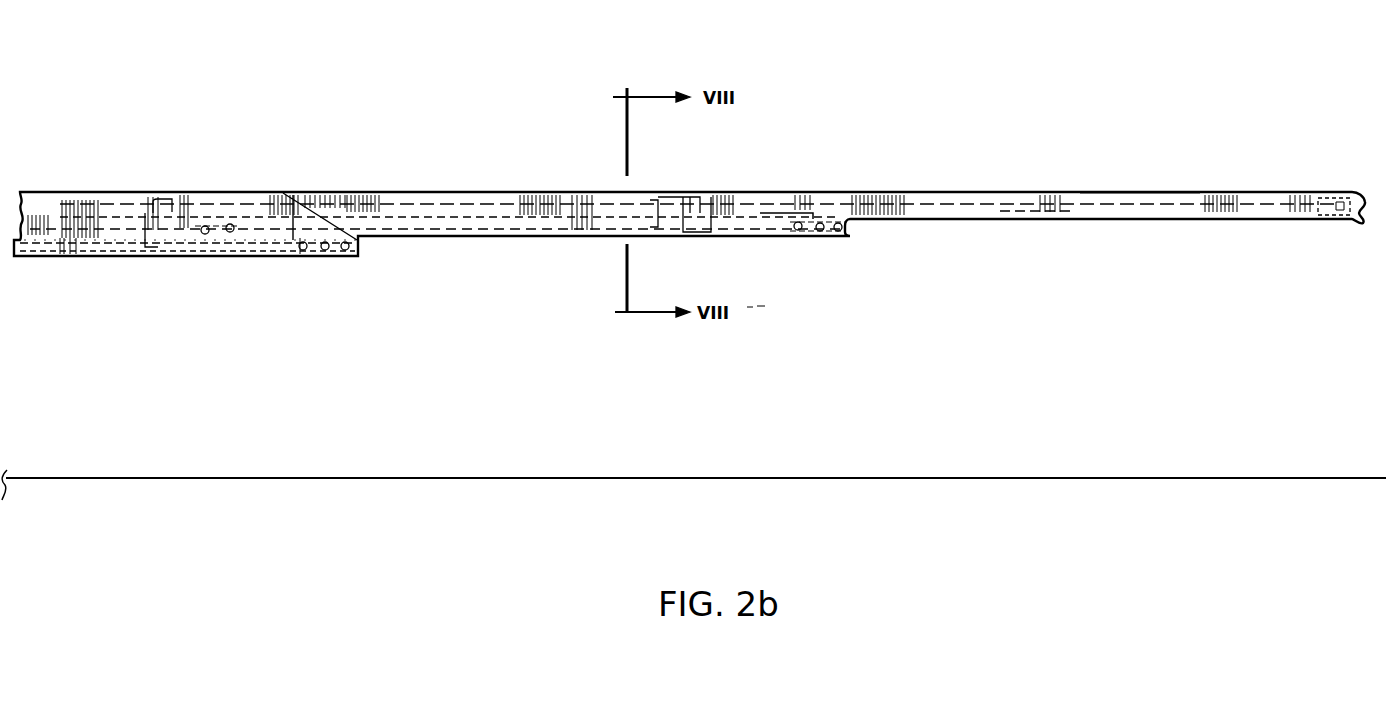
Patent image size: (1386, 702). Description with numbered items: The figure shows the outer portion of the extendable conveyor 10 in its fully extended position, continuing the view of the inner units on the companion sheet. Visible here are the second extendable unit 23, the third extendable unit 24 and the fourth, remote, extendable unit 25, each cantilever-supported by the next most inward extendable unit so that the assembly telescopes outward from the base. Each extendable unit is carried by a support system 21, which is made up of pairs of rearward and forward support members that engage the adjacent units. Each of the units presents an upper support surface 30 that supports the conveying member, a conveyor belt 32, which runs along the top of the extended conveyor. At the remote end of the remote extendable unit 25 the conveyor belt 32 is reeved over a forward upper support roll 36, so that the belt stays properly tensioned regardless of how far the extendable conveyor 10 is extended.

The extendable conveyor 10 is at (497, 186).
The support system 21 is at (244, 262).
The second extendable unit 23 is at (80, 262).
The third extendable unit 24 is at (489, 250).
The fourth, remote, extendable unit 25 is at (1011, 230).
The upper support surface 30 is at (1032, 200).
The conveyor belt 32 is at (1120, 192).
The forward upper support roll 36 is at (1337, 192).